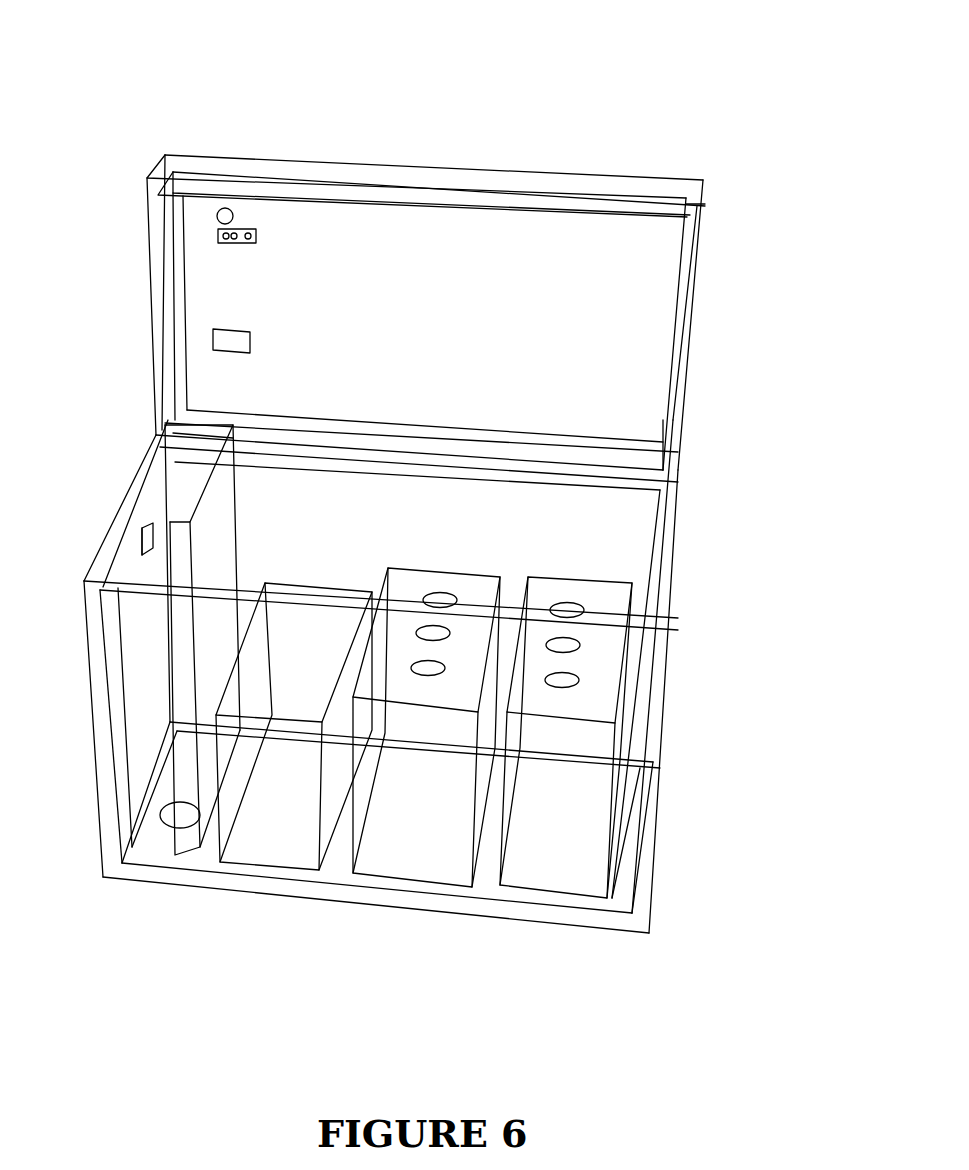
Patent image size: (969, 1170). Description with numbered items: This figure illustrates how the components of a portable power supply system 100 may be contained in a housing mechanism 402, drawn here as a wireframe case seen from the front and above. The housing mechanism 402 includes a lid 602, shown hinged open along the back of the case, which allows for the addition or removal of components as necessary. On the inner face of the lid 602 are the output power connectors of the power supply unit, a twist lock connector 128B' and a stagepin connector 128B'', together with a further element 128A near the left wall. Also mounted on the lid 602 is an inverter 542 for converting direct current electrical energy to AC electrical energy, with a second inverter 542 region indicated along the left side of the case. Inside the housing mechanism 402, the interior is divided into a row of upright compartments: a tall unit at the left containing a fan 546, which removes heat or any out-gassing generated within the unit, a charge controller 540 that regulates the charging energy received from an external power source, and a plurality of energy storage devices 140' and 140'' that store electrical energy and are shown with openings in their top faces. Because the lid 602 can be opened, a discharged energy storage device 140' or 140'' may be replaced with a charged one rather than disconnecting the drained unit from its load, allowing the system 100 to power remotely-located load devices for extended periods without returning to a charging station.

The portable power supply system 100 is at (485, 118).
The lid 602 is at (705, 324).
The housing mechanism 402 is at (658, 847).
The latch component 128A is at (140, 530).
The L5-20 twist lock connector 128B' is at (276, 176).
The stagepin connector 128B'' is at (312, 192).
The inverter 542 is at (228, 353).
The fan 546 is at (160, 815).
The charge controller 540 is at (223, 872).
The energy storage device 140' is at (426, 702).
The energy storage device 140'' is at (566, 710).